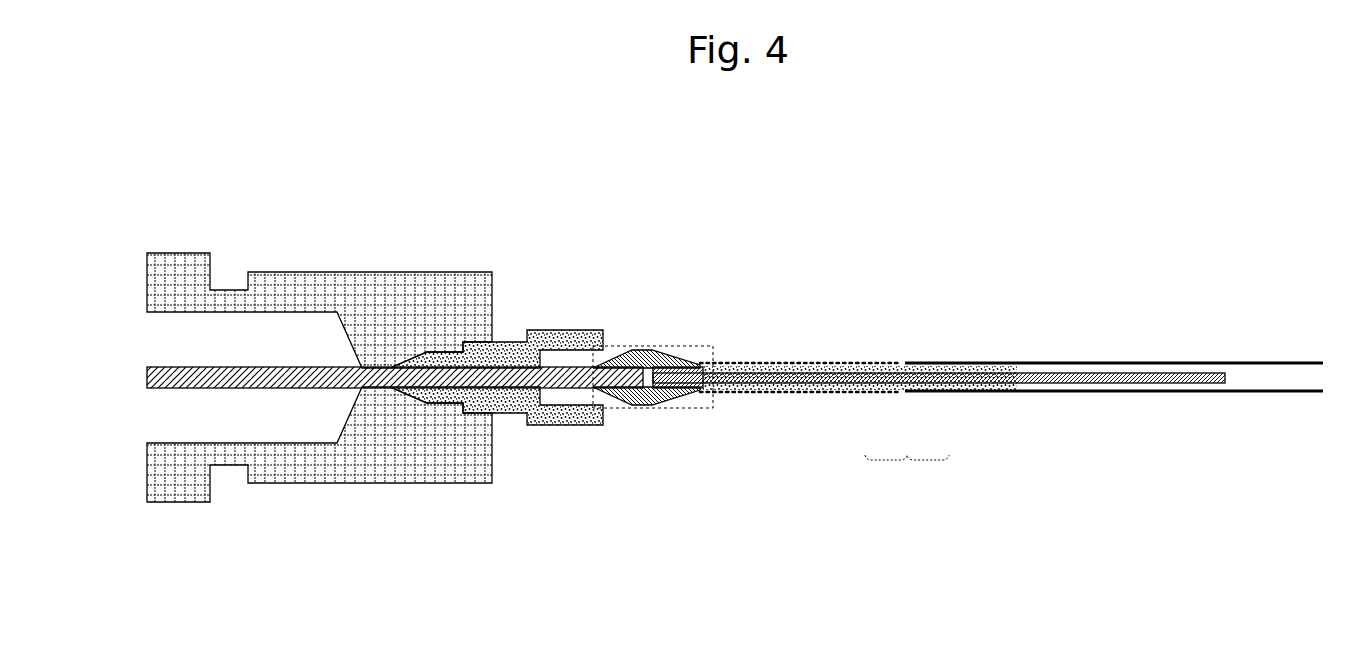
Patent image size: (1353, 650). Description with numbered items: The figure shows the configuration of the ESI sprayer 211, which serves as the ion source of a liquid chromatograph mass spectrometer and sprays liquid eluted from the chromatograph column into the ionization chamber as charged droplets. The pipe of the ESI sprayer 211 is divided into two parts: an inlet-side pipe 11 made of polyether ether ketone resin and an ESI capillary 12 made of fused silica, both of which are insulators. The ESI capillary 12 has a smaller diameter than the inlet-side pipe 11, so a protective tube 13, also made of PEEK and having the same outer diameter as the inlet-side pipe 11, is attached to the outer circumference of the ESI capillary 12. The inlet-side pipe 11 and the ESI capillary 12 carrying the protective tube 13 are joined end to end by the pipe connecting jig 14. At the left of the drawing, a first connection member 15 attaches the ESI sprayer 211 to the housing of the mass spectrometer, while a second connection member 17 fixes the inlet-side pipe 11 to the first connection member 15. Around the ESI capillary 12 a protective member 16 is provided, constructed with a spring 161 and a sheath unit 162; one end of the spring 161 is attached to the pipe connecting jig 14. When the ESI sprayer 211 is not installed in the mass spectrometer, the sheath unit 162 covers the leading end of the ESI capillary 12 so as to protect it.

The inlet-side pipe 11 is at (208, 367).
The ESI capillary 12 is at (1033, 378).
The protective tube 13 is at (962, 390).
The pipe connecting jig 14 is at (655, 407).
The first connection member 15 is at (427, 483).
The protective member 16 is at (907, 473).
The spring 161 is at (832, 393).
The sheath unit 162 is at (945, 393).
The second connection member 17 is at (558, 427).
The ESI sprayer 211 is at (1140, 238).